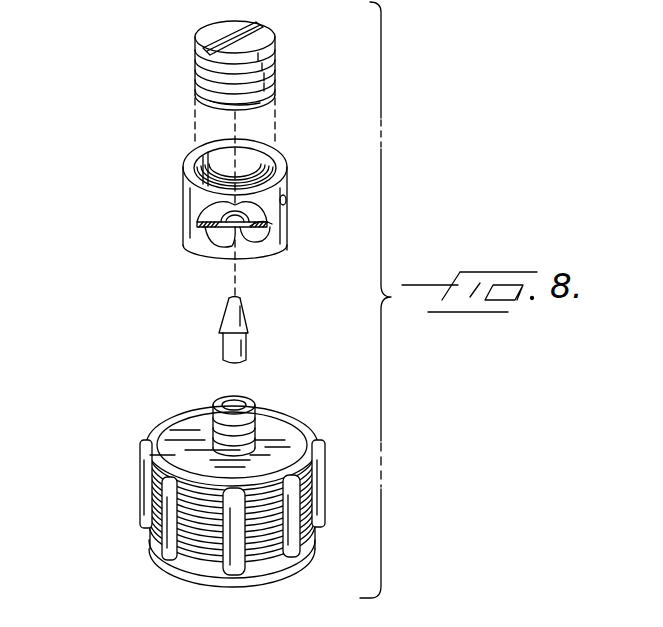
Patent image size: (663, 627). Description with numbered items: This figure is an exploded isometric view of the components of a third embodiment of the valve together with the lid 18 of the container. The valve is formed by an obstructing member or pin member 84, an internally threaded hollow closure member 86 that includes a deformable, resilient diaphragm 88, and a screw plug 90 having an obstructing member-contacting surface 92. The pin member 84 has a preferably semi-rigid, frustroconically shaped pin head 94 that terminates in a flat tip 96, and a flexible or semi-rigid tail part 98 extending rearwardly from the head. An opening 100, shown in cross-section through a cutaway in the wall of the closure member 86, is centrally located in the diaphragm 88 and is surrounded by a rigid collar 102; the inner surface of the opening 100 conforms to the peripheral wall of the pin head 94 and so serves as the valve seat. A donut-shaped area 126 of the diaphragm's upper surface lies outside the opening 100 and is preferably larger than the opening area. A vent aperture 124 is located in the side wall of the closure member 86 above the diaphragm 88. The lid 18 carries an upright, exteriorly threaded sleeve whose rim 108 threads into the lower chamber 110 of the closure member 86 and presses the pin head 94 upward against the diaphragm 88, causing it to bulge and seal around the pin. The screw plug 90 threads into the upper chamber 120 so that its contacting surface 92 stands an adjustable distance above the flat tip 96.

The lid 18 is at (185, 468).
The obstructing member 84 is at (220, 330).
The hollow closure member 86 is at (180, 172).
The diaphragm 88 is at (200, 231).
The screw plug 90 is at (190, 46).
The obstructing member-contacting surface 92 is at (215, 103).
The pin head 94 is at (250, 326).
The flat tip 96 is at (241, 298).
The tail part 98 is at (218, 321).
The opening 100 is at (232, 230).
The rigid collar 102 is at (224, 210).
The rim 108 is at (226, 397).
The lower chamber 110 is at (247, 235).
The upper chamber 120 is at (246, 160).
The vent aperture 124 is at (289, 200).
The donut-shaped area 126 is at (252, 226).